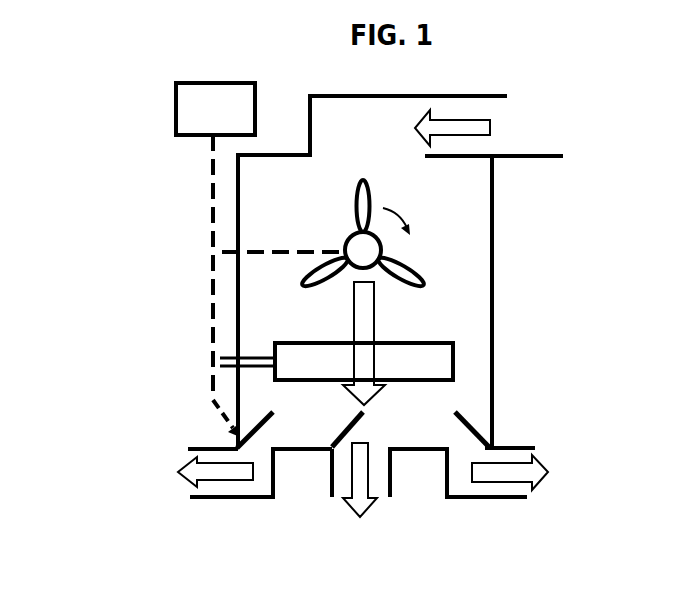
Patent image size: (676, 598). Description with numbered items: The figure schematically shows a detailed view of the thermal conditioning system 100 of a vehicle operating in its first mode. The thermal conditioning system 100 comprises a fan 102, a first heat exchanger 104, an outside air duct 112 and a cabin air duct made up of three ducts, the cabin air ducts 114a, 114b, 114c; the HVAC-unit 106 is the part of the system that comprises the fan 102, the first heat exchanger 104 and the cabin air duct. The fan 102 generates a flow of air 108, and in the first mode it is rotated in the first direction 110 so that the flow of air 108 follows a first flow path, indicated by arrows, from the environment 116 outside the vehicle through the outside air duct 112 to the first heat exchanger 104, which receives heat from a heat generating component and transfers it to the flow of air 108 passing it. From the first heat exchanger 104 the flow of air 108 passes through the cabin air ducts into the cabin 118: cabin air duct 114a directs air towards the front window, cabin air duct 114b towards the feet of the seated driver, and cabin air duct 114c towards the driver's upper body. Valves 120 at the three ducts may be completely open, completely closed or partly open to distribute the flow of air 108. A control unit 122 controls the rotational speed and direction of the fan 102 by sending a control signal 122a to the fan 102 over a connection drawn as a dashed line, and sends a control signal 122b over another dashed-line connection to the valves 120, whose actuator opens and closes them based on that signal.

The thermal conditioning system 100 is at (97, 128).
The fan 102 is at (343, 242).
The first heat exchanger 104 is at (310, 357).
The HVAC-unit 106 is at (492, 213).
The flow of air 108 is at (375, 308).
The first direction 110 is at (418, 222).
The outside air duct 112 is at (482, 109).
The cabin air duct 114a is at (210, 445).
The cabin air duct 114b is at (337, 480).
The cabin air duct 114c is at (505, 500).
The environment 116 is at (515, 119).
The cabin 118 is at (361, 512).
The valves 120 is at (252, 427).
The control unit 122 is at (208, 123).
The control signal 122a is at (298, 252).
The control signal 122b is at (230, 432).